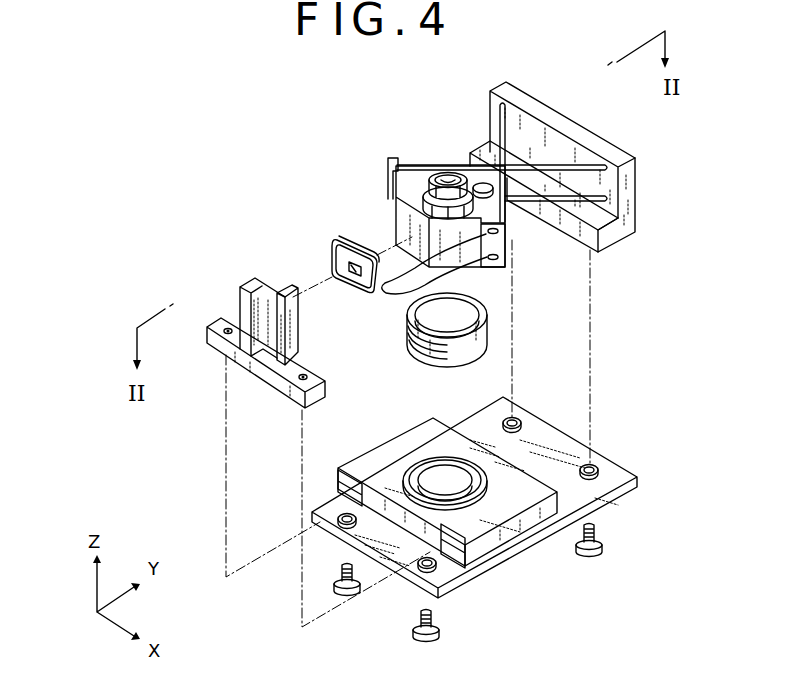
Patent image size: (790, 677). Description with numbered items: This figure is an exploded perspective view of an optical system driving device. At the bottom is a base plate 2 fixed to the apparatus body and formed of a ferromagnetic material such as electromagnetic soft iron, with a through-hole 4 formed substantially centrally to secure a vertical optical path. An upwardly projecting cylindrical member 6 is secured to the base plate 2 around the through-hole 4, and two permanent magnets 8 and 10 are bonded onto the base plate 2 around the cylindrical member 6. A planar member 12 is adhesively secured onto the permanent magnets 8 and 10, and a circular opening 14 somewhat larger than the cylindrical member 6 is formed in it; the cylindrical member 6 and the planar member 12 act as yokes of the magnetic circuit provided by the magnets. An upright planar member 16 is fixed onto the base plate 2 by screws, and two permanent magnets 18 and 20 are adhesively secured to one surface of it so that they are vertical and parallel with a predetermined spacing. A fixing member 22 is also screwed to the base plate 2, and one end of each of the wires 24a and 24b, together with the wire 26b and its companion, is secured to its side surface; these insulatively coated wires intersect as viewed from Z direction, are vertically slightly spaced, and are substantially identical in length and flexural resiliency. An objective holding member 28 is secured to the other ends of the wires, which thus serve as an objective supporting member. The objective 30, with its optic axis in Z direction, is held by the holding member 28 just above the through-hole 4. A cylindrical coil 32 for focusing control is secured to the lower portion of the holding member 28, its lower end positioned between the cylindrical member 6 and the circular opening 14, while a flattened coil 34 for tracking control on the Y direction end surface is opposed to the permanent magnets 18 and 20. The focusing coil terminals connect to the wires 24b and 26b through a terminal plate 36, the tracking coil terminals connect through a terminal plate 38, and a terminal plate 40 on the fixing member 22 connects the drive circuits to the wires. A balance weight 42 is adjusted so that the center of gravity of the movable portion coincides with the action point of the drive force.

The base plate 2 is at (637, 477).
The through-hole 4 is at (438, 470).
The cylindrical member 6 is at (410, 470).
The permanent magnet 8 is at (343, 477).
The permanent magnet 10 is at (482, 550).
The planar member 12 is at (520, 500).
The circular opening 14 is at (482, 468).
The upright planar member 16 is at (260, 370).
The permanent magnet 18 is at (256, 276).
The permanent magnet 20 is at (292, 324).
The fixing member 22 is at (598, 150).
The wire 24a is at (507, 122).
The wire 24b is at (606, 172).
The wire 26b is at (608, 222).
The objective holding member 28 is at (393, 213).
The objective 30 is at (440, 175).
The cylindrical coil for focusing control 32 is at (410, 336).
The flattened coil for tracking control 34 is at (338, 240).
The terminal plate 36 is at (392, 165).
The terminal plate 38 is at (500, 244).
The terminal plate 40 is at (636, 175).
The balance weight 42 is at (479, 183).